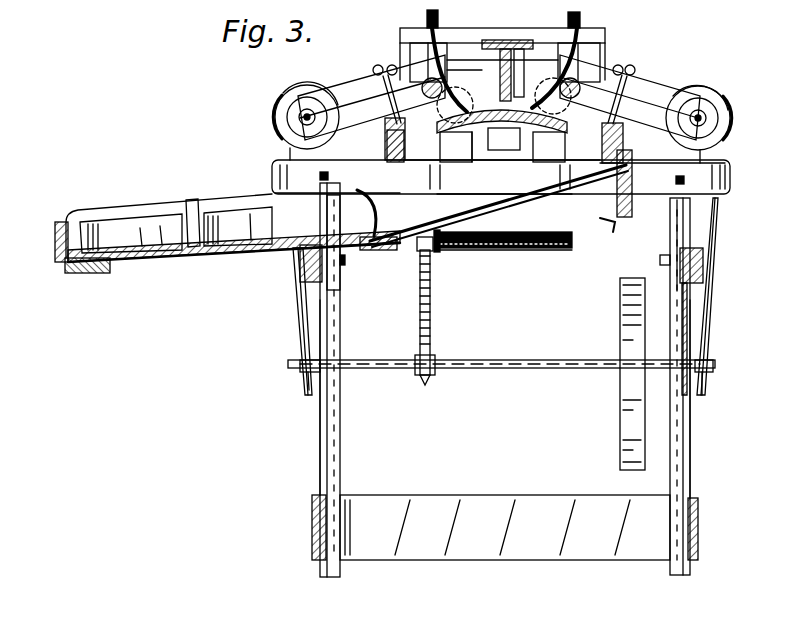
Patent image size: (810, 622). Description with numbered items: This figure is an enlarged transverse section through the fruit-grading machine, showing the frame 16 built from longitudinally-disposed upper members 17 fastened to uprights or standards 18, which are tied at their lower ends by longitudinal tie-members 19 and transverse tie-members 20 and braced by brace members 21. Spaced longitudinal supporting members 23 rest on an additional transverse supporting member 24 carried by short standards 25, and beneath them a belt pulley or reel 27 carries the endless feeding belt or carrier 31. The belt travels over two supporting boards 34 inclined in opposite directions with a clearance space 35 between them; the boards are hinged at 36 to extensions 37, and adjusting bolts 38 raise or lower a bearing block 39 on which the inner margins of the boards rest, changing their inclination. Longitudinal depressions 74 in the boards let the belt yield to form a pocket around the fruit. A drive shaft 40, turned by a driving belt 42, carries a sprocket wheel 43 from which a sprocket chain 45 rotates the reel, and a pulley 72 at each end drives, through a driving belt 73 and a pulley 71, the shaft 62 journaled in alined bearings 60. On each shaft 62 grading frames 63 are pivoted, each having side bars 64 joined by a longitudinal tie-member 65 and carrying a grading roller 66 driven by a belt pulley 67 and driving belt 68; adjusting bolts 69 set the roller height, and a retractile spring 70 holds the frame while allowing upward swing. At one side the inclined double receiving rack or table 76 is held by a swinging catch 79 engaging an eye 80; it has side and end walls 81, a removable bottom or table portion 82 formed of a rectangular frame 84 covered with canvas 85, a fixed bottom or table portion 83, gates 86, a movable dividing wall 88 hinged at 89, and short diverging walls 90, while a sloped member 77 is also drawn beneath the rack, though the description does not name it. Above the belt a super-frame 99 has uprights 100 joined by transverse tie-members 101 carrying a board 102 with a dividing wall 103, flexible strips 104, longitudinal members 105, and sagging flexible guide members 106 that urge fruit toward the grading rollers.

The frame 16 is at (668, 200).
The longitudinally-disposed upper members 17 is at (300, 272).
The uprights or standards 18 is at (334, 412).
The longitudinal tie-members 19 is at (312, 525).
The transverse tie-members 20 is at (505, 527).
The brace members 21 is at (321, 447).
The longitudinal supporting members 23 is at (402, 163).
The additional transverse supporting member 24 is at (640, 196).
The short standards 25 is at (338, 270).
The belt pulley or reel 27 is at (525, 250).
The endless feeding belt or carrier 31 is at (442, 252).
The supporting boards 34 is at (502, 147).
The clearance space 35 is at (500, 145).
The hinge or pivot 36 is at (502, 170).
The extensions 37 is at (500, 135).
The adjusting bolts 38 is at (557, 195).
The bearing block 39 is at (470, 164).
The drive shaft 40 is at (530, 361).
The driving belt 42 is at (620, 400).
The sprocket wheel 43 is at (424, 380).
The sprocket chain 45 is at (420, 312).
The alined bearings 60 is at (290, 150).
The shaft 62 is at (290, 110).
The grading frames 63 is at (345, 97).
The side bars 64 is at (363, 80).
The longitudinal tie-member 65 is at (388, 120).
The grading roller 66 is at (412, 50).
The belt pulley 67 is at (299, 122).
The driving belt 68 is at (316, 85).
The adjusting bolts 69 is at (385, 63).
The retractile spring 70 is at (393, 158).
The pulley 71 is at (292, 92).
The pulley 72 is at (305, 390).
The driving belt 73 is at (303, 315).
The longitudinal depressions 74 is at (466, 105).
The double receiving rack or table 76 is at (230, 257).
The sloped bar 77 is at (585, 232).
The swinging catch 79 is at (340, 163).
The coöperating part or eye 80 is at (632, 180).
The side and end walls 81 is at (612, 224).
The removable bottom or table portion 82 is at (494, 252).
The fixed bottom or table portion 83 is at (176, 262).
The rectangular frame 84 is at (430, 252).
The canvas 85 is at (412, 250).
The movable wall or gate 86 is at (55, 243).
The movable dividing wall 88 is at (238, 205).
The hinge 89 is at (194, 199).
The short diverging walls 90 is at (112, 214).
The super-frame 99 is at (502, 25).
The uprights 100 is at (427, 20).
The transverse tie-members 101 is at (470, 50).
The longitudinally-disposed board 102 is at (520, 40).
The dividing wall 103 is at (523, 70).
The flexible strips 104 is at (440, 82).
The longitudinal members 105 is at (440, 48).
The flexible guide members 106 is at (460, 30).